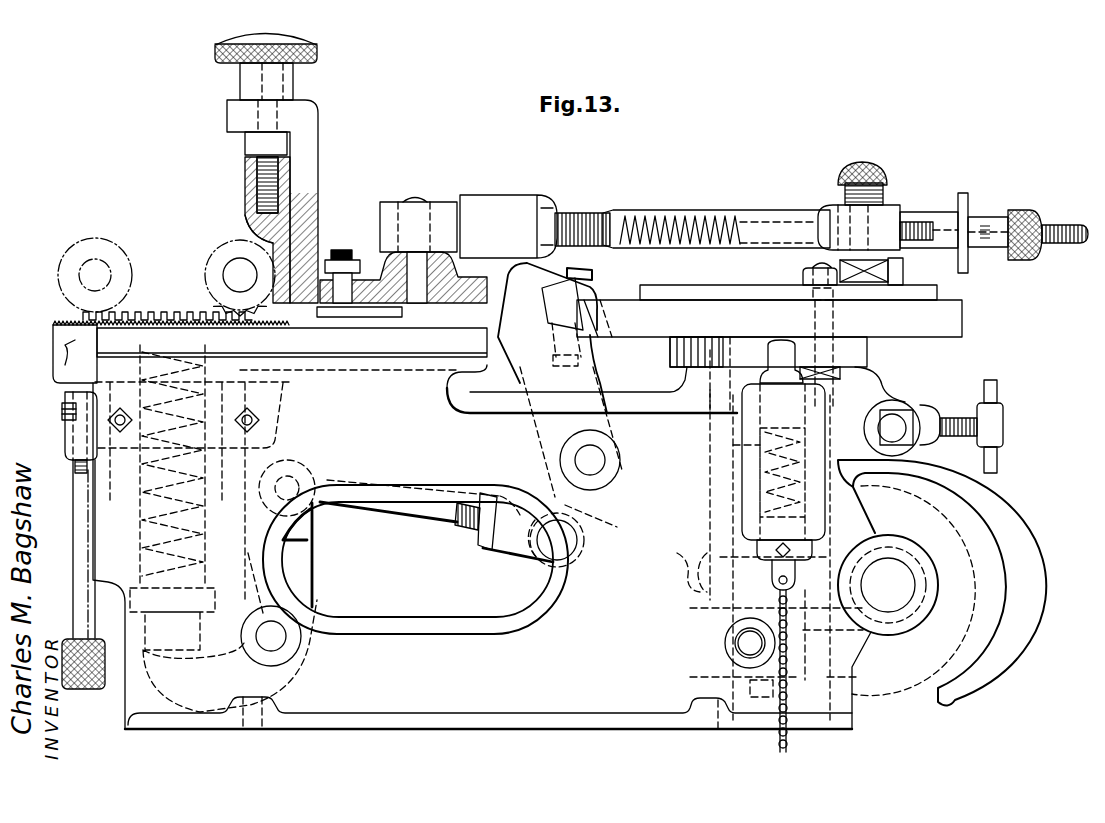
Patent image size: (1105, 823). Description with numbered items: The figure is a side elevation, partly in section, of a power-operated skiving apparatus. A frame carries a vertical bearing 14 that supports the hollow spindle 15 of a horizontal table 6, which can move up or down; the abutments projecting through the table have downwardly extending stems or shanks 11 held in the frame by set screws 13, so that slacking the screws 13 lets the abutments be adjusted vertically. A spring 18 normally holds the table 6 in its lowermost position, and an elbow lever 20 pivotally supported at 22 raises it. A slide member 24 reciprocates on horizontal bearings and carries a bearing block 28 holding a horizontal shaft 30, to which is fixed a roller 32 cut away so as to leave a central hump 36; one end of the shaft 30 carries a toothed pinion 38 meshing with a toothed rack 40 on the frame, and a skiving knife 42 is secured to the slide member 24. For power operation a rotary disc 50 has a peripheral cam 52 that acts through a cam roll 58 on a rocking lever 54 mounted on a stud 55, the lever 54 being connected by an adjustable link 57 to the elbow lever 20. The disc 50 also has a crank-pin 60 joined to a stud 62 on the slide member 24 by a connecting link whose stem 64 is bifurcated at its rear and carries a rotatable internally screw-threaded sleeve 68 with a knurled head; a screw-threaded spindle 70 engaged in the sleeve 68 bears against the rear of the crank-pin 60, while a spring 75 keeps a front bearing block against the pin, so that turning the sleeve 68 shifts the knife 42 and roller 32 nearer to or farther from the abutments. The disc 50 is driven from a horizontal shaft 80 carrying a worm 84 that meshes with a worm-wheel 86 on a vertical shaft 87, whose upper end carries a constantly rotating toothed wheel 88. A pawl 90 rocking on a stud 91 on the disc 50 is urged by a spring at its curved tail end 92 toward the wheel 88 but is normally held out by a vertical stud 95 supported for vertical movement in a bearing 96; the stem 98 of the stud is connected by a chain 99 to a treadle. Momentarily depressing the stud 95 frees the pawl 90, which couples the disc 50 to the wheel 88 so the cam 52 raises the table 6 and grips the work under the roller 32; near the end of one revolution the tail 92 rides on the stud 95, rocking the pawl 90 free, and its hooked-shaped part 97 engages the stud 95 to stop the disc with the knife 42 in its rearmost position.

The horizontal table 6 is at (267, 321).
The stems or shanks 11 is at (67, 438).
The set screws 13 is at (63, 412).
The vertical bearing 14 is at (110, 537).
The hollow spindle 15 is at (133, 505).
The spring 18 is at (123, 563).
The elbow lever 20 is at (298, 578).
The pivot 22 is at (273, 641).
The slide member 24 is at (447, 293).
The bearing block 28 is at (258, 233).
The horizontal shaft 30 is at (233, 282).
The roller 32 is at (213, 255).
The central hump 36 is at (245, 243).
The toothed pinion 38 is at (213, 305).
The toothed rack 40 is at (110, 313).
The skiving knife 42 is at (297, 312).
The rotary disc 50 is at (643, 286).
The cam 52 is at (617, 323).
The rocking lever 54 is at (540, 367).
The stud 55 is at (590, 460).
The adjustable link 57 is at (423, 510).
The cam roll 58 is at (557, 318).
The crank-pin 60 is at (880, 215).
The stud 62 is at (412, 200).
The stem of the link 64 is at (623, 222).
The internally screw-threaded sleeve 68 is at (1000, 223).
The screw-threaded spindle 70 is at (1050, 228).
The spring 75 is at (725, 220).
The horizontal shaft 80 is at (897, 594).
The worm 84 is at (918, 615).
The worm-wheel 86 is at (700, 578).
The vertical shaft 87 is at (733, 445).
The toothed wheel 88 is at (680, 352).
The pawl 90 is at (860, 348).
The stud 91 is at (820, 268).
The curved tail end 92 is at (738, 350).
The vertical stud 95 is at (782, 345).
The bearing 96 is at (745, 498).
The hooked-shaped part 97 is at (797, 353).
The stem 98 is at (775, 562).
The chain 99 is at (788, 708).